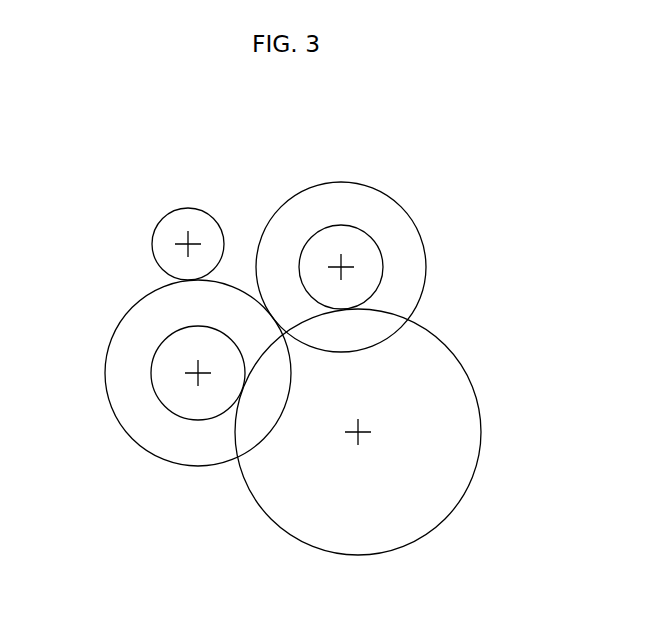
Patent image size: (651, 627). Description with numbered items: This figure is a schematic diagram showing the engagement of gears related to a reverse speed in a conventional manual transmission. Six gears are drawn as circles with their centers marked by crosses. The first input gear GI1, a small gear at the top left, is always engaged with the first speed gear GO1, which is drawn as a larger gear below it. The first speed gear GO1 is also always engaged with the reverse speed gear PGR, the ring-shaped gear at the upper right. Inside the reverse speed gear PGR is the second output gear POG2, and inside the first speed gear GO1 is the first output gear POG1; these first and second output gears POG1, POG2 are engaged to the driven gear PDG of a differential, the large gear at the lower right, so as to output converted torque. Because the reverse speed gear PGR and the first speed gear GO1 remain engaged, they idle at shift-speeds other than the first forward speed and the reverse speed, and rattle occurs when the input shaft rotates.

The first input gear GI1 is at (187, 208).
The reverse speed gear PGR is at (345, 185).
The second output gear POG2 is at (365, 242).
The first speed gear GO1 is at (112, 363).
The first output gear POG1 is at (168, 397).
The driven gear PDG is at (478, 427).